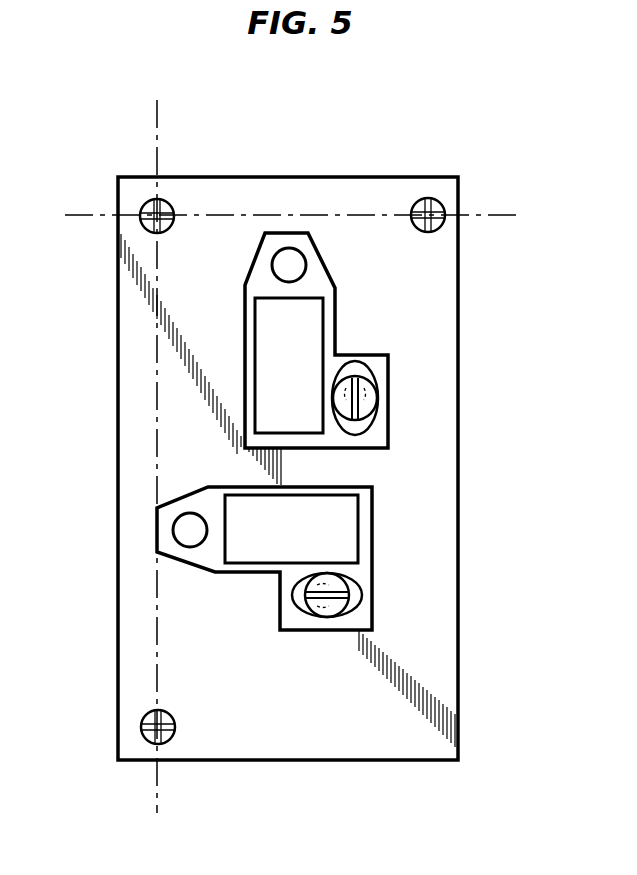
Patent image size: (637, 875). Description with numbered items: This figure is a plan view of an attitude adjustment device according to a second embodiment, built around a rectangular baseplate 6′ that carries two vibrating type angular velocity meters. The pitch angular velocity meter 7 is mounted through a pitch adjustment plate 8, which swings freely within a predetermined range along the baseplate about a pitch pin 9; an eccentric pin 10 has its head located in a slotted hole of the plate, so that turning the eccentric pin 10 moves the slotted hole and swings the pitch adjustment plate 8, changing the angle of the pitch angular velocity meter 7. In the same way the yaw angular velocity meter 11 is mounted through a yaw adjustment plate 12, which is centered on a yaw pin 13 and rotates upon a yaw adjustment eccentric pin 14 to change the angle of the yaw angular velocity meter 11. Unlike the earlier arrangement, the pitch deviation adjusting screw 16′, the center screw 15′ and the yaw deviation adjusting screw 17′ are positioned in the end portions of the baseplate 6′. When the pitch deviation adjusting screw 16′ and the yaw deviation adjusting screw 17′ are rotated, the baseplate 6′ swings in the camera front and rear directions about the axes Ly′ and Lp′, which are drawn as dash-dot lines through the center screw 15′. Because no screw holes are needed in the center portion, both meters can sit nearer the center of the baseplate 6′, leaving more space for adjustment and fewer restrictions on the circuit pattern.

The baseplate 6′ is at (460, 280).
The pitch angular velocity meter 7 is at (332, 545).
The pitch adjustment plate 8 is at (180, 492).
The pitch pin 9 is at (192, 528).
The eccentric pin 10 is at (327, 617).
The yaw angular velocity meter 11 is at (267, 365).
The yaw adjustment plate 12 is at (286, 232).
The yaw pin 13 is at (290, 264).
The yaw adjustment eccentric pin 14 is at (367, 403).
The center screw 15′ is at (144, 222).
The pitch deviation adjusting screw 16′ is at (438, 200).
The yaw deviation adjusting screw 17′ is at (142, 728).
The axis Lp′ is at (189, 208).
The axis Ly′ is at (152, 673).